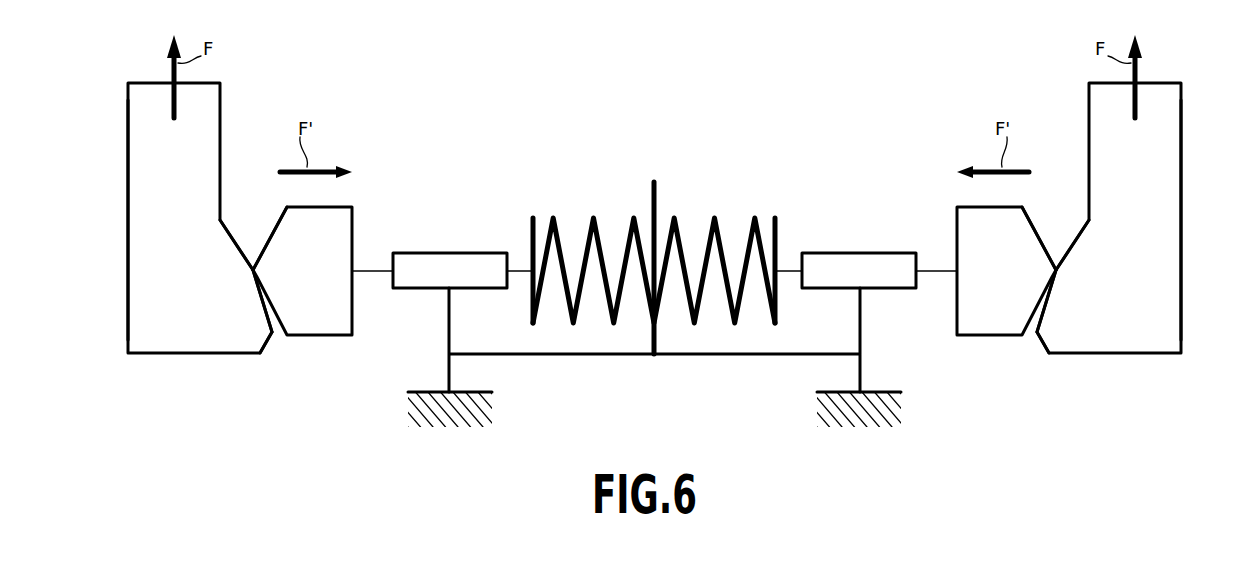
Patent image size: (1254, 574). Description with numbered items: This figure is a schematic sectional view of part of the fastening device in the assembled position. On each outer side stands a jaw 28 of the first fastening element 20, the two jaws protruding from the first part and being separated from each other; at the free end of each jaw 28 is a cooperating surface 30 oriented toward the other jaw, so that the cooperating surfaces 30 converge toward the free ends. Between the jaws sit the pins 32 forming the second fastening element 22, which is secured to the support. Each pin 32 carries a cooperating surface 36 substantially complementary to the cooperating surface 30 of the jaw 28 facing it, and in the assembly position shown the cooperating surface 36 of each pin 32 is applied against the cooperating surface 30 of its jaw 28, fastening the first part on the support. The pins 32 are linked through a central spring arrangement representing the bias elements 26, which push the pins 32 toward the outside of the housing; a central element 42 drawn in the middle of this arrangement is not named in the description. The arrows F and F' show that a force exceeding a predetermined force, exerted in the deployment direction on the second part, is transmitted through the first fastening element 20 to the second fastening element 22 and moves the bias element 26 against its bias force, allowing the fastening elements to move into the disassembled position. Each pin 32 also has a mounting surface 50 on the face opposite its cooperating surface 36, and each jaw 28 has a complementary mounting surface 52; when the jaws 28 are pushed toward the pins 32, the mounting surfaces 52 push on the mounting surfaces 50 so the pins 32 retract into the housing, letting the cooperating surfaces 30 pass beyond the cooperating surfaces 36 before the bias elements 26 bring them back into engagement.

The first fastening element 20 is at (147, 126).
The second fastening element 22 is at (516, 129).
The bias element 26 is at (600, 220).
The jaw 28 is at (147, 211).
The cooperating surface 30 is at (238, 257).
The pin 32 is at (318, 326).
The cooperating surface 36 is at (253, 285).
The central rod 42 is at (655, 197).
The mounting surface 50 is at (269, 236).
The mounting surface 52 is at (273, 343).